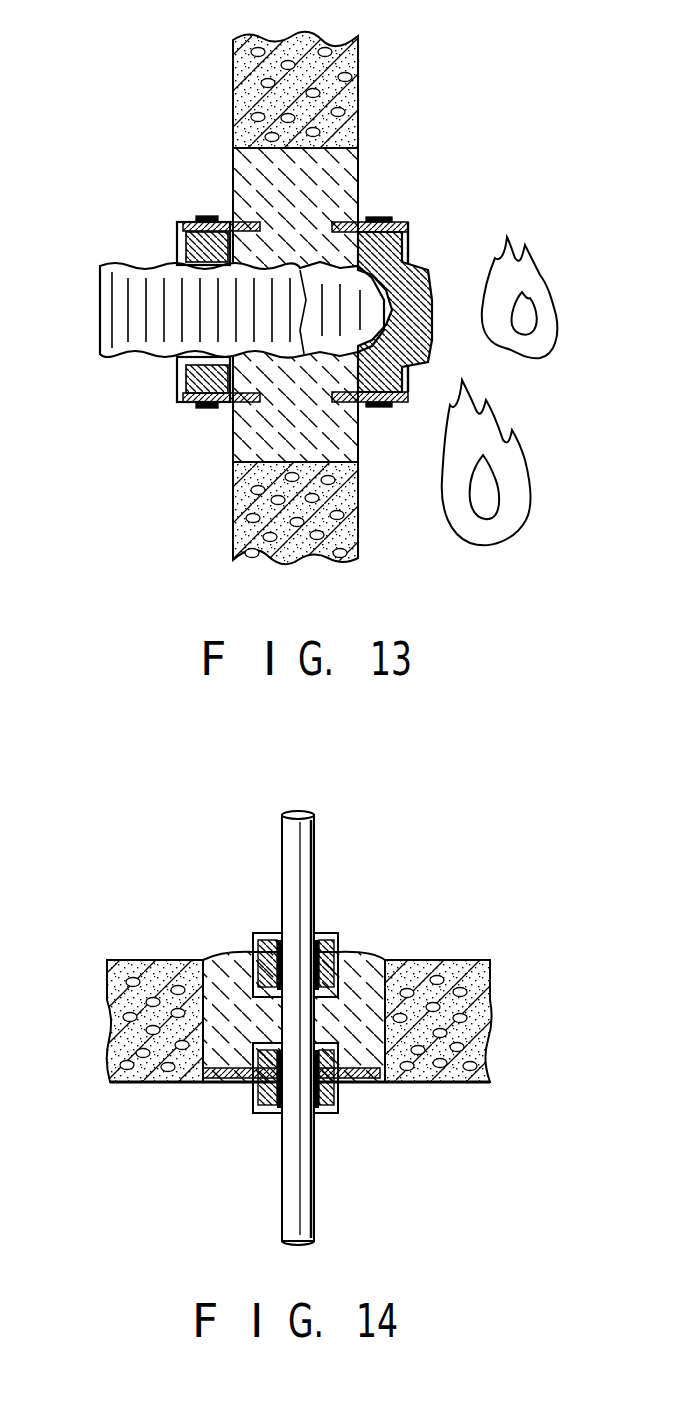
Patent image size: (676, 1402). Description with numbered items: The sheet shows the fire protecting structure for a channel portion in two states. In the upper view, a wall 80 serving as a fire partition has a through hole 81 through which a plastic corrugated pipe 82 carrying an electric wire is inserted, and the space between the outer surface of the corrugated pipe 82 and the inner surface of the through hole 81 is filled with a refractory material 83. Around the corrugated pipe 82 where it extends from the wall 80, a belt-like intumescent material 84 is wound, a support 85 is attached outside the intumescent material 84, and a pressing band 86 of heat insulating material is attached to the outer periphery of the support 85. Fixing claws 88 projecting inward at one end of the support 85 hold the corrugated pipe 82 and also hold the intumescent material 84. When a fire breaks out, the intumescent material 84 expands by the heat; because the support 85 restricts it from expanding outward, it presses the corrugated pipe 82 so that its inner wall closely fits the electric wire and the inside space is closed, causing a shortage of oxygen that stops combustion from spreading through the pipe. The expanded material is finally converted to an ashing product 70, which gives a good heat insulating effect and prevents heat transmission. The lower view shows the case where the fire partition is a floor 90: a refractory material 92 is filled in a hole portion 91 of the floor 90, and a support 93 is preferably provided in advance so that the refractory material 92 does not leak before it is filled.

In FIG. 13, the ashing product 70 is at (430, 268).
In FIG. 13, the wall 80 is at (360, 61).
In FIG. 13, the through hole 81 is at (358, 458).
In FIG. 13, the plastic corrugated pipe 82 is at (102, 285).
In FIG. 13, the refractory material 83 is at (358, 158).
In FIG. 13, the intumescent material 84 is at (186, 246).
In FIG. 13, the support 85 is at (226, 220).
In FIG. 13, the pressing band 86 is at (205, 216).
In FIG. 13, the fixing claws 88 is at (180, 226).
In FIG. 14, the floor 90 is at (478, 962).
In FIG. 14, the hole portion 91 is at (411, 968).
In FIG. 14, the refractory material 92 is at (372, 953).
In FIG. 14, the support 93 is at (375, 1080).